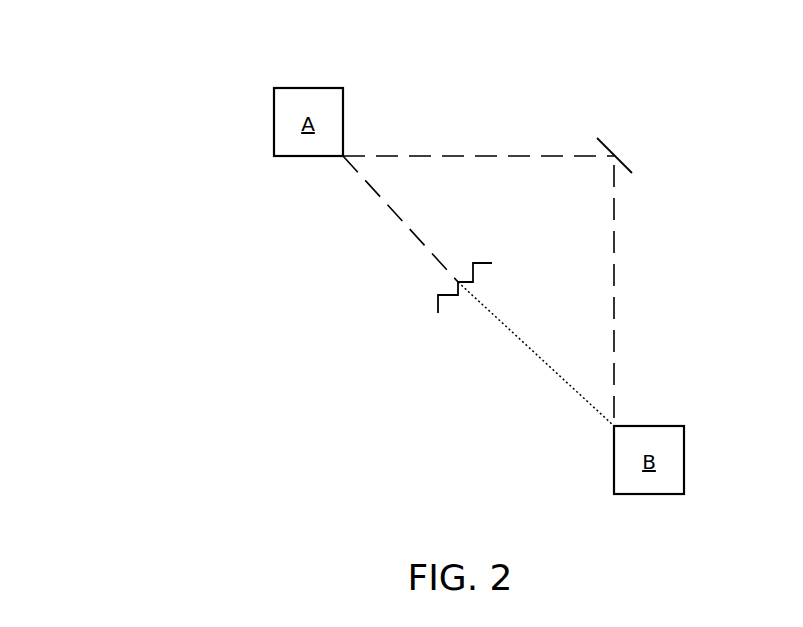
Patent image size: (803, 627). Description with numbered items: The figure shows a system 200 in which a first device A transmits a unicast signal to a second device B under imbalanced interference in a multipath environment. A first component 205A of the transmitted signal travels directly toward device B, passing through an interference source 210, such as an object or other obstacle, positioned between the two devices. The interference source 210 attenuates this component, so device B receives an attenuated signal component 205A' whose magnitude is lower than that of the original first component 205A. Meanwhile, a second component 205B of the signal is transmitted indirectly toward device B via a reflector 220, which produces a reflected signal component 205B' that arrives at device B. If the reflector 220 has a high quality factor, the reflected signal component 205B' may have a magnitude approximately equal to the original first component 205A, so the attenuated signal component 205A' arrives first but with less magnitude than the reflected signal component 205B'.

The system 200 is at (115, 52).
The first component of the transmitted signal 205A is at (372, 219).
The attenuated signal component 205A' is at (520, 354).
The second component of the transmitted signal 205B is at (478, 128).
The reflected signal component 205B' is at (667, 295).
The interference source 210 is at (425, 314).
The reflector 220 is at (612, 151).